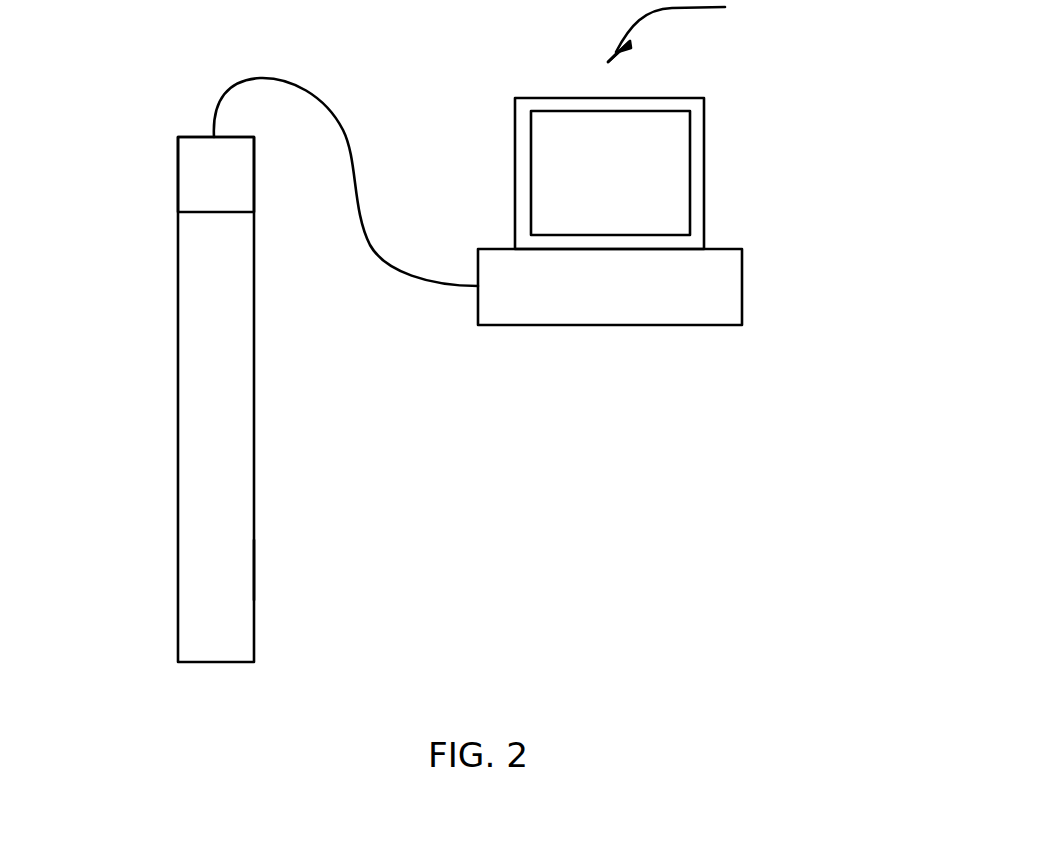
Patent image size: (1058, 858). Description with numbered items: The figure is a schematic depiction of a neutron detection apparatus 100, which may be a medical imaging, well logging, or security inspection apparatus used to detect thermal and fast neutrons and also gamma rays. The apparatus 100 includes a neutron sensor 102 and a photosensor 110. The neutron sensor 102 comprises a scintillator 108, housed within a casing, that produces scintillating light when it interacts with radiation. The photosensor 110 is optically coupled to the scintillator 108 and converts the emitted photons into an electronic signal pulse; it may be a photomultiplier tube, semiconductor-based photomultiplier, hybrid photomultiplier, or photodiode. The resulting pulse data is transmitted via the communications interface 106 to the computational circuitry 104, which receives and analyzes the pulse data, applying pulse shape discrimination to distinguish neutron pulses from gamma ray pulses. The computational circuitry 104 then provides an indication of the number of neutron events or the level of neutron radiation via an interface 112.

The neutron detection apparatus 100 is at (691, 32).
The neutron sensor 102 is at (177, 384).
The computational circuitry 104 is at (742, 297).
The communications interface 106 is at (308, 92).
The scintillator 108 is at (254, 568).
The photosensor 110 is at (177, 176).
The interface 112 is at (704, 175).